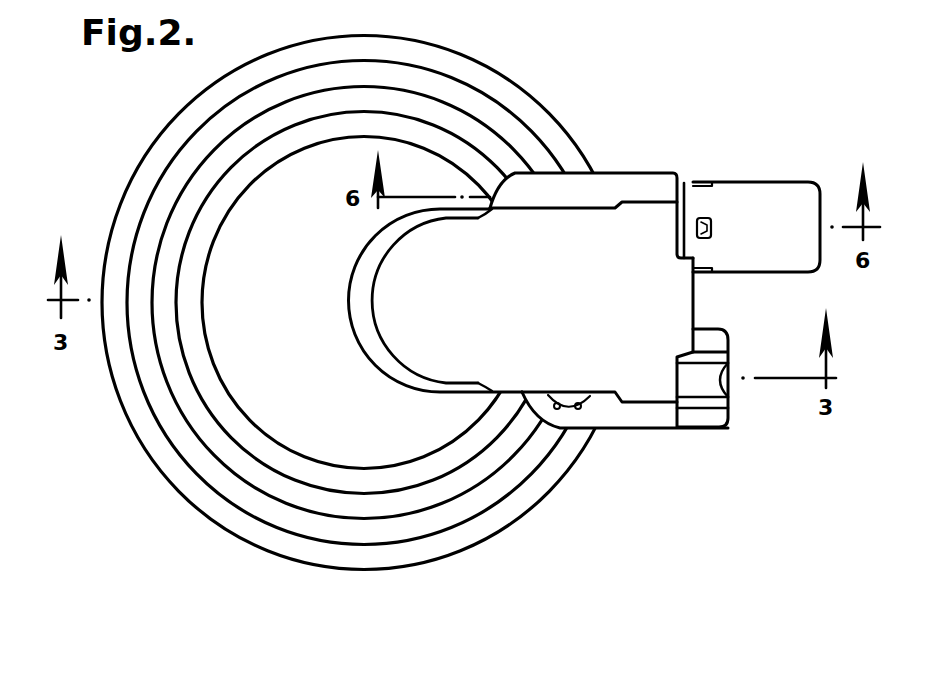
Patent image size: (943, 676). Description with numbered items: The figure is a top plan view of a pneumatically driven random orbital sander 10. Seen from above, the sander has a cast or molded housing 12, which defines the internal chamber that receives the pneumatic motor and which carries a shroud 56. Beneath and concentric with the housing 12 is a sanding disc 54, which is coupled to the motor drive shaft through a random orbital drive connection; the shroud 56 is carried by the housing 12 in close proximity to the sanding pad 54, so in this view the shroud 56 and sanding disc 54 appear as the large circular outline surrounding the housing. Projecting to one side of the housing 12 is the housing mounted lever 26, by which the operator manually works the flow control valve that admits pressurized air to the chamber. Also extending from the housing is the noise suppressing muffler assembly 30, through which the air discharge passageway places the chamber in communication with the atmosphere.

The random orbital sander 10 is at (344, 299).
The housing 12 is at (268, 305).
The lever 26 is at (482, 307).
The muffler assembly 30 is at (584, 252).
The sanding disc 54 is at (364, 303).
The shroud 56 is at (364, 286).